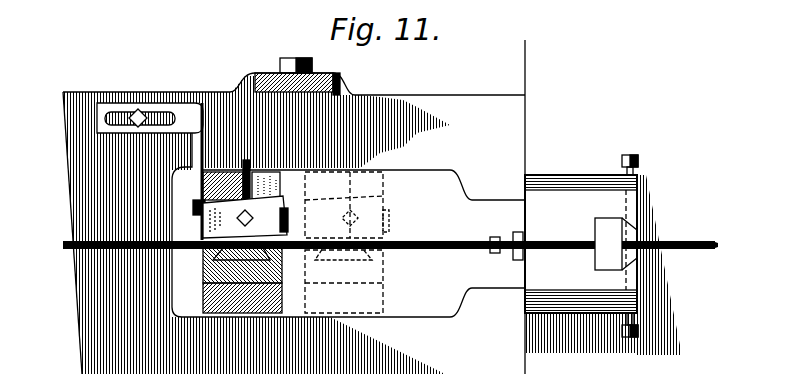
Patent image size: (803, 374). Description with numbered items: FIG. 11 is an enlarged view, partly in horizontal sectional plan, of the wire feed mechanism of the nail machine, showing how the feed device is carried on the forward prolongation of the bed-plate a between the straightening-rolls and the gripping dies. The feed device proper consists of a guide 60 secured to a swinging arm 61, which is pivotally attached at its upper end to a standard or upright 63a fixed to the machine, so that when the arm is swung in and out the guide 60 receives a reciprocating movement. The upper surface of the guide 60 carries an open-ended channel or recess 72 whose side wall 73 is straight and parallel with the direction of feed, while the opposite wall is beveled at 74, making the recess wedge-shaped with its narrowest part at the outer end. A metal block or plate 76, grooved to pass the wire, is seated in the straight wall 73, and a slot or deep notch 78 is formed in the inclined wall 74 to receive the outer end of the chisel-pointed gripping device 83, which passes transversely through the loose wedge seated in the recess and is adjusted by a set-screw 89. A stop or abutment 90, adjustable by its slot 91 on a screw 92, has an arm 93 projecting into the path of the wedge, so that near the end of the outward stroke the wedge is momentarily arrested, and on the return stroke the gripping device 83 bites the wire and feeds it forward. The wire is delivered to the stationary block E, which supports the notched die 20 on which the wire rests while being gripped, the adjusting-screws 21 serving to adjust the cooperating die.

The bed-plate a is at (467, 95).
The standard or upright 63a is at (281, 73).
The stop or abutment 90 is at (193, 120).
The slot 91 is at (105, 117).
The screw 92 is at (141, 112).
The gripping device 83 is at (246, 162).
The beveled or inclined side wall 74 is at (205, 190).
The slot or deep notch 78 is at (268, 183).
The arm 93 is at (203, 212).
The set-screw 89 is at (245, 217).
The channel or recess 72 is at (290, 237).
The side wall 73 is at (285, 262).
The metal block or plate 76 is at (285, 278).
The guide 60 is at (215, 270).
The swinging arm 61 is at (218, 296).
The stationary block E is at (570, 185).
The adjusting-screws 21 is at (628, 155).
The die 20 is at (632, 238).